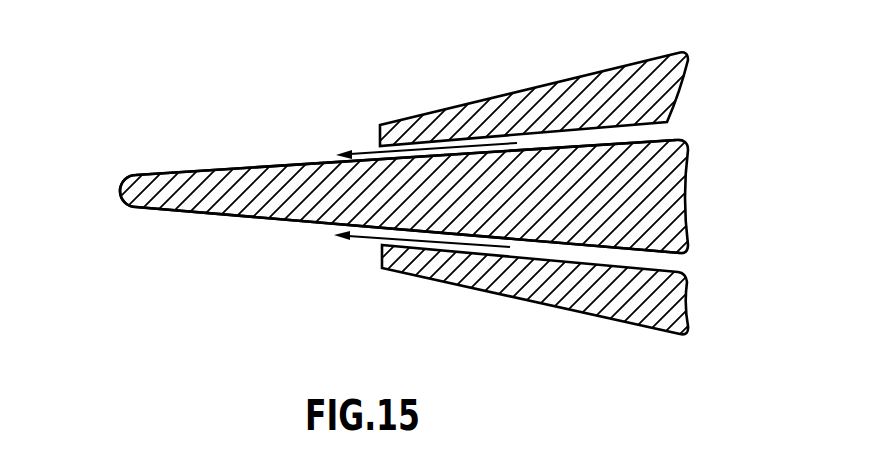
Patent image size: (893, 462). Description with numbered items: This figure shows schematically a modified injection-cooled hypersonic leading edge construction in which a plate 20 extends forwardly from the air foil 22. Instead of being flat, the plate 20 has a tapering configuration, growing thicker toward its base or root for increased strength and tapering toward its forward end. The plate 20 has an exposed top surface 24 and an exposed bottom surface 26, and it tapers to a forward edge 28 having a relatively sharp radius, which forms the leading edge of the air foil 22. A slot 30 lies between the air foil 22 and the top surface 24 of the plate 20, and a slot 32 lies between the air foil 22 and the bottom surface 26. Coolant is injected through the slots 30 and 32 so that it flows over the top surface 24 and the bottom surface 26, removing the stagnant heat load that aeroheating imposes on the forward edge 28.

The plate 20 is at (446, 231).
The air foil 22 is at (446, 231).
The top surface 24 is at (406, 137).
The bottom surface 26 is at (408, 253).
The forward edge 28 is at (101, 221).
The slot 30 is at (438, 96).
The slot 32 is at (438, 300).